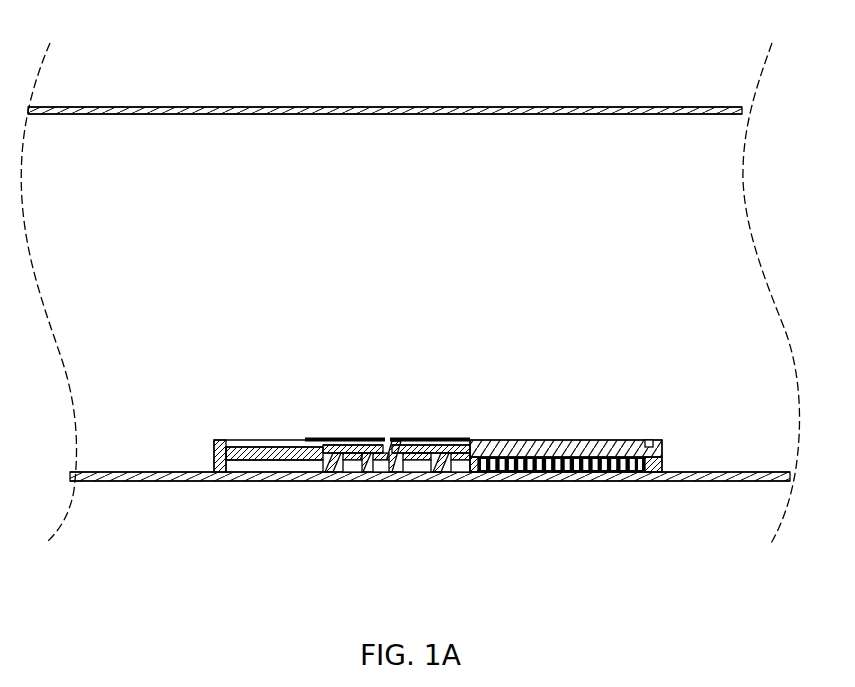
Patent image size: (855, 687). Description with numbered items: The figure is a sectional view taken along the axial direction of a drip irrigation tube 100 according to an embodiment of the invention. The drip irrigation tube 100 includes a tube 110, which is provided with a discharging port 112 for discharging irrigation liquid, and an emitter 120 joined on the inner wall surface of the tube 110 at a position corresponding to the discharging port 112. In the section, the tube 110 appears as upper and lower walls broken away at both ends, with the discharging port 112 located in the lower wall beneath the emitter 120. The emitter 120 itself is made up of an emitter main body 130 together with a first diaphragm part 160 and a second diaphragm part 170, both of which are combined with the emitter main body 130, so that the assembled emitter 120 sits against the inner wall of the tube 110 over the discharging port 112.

The drip irrigation tube 100 is at (681, 67).
The tube 110 is at (382, 106).
The discharging port 112 is at (279, 482).
The emitter 120 is at (543, 346).
The emitter main body 130 is at (520, 440).
The first diaphragm part 160 is at (426, 437).
The second diaphragm part 170 is at (343, 437).